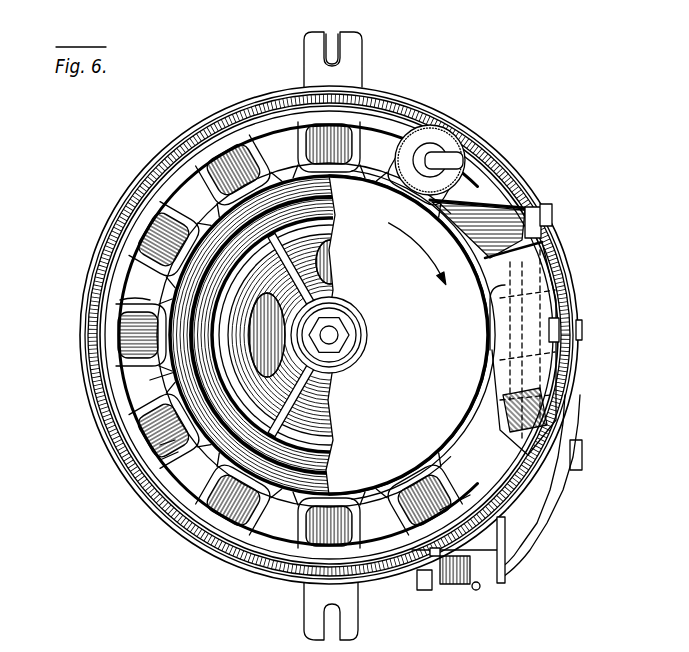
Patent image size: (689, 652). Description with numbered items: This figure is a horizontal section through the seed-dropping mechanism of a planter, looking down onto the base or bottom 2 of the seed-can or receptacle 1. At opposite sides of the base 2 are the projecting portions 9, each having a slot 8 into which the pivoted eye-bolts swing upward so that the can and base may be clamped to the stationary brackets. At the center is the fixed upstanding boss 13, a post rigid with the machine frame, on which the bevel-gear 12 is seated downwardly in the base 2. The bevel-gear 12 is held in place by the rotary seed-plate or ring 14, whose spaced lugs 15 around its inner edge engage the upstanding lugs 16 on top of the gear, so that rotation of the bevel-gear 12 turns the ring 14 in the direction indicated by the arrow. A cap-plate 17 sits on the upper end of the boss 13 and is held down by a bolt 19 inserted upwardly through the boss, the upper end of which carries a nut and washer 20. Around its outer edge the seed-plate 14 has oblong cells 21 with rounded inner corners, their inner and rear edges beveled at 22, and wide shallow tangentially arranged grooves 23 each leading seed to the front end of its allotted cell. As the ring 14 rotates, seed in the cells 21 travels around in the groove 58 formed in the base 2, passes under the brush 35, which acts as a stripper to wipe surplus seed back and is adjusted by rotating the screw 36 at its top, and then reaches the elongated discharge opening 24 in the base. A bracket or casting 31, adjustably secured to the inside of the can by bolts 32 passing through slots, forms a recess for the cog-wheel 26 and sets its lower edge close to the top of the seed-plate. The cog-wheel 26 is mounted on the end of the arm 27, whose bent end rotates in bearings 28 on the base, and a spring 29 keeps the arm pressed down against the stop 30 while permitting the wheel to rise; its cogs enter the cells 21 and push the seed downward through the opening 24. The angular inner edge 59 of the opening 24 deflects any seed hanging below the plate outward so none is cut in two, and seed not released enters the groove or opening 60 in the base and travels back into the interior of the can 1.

The seed-can or receptacle 1 is at (513, 165).
The bottom or base-plate or casting 2 is at (103, 435).
The slots 8 is at (330, 55).
The projecting portions 9 is at (310, 47).
The bevel-gear 12 is at (323, 385).
The boss 13 is at (330, 298).
The rotary seed-plate or ring 14 is at (170, 373).
The spaced lugs 15 is at (240, 200).
The upstanding lugs 16 is at (245, 225).
The cap-plate 17 is at (343, 443).
The bolt 19 is at (337, 333).
The nut and washer 20 is at (342, 338).
The cells 21 is at (143, 333).
The beveled edges 22 is at (165, 460).
The wide shallow grooves 23 is at (135, 302).
The elongated opening 24 is at (577, 362).
The cog-wheel 26 is at (570, 287).
The arm 27 is at (557, 492).
The bearings 28 is at (497, 582).
The spring 29 is at (460, 582).
The stop 30 is at (580, 453).
The bracket or casting 31 is at (508, 276).
The bolts 32 is at (552, 217).
The brush 35 is at (425, 130).
The screw 36 is at (453, 155).
The groove 58 is at (160, 240).
The angular inner edge 59 is at (495, 366).
The groove or opening 60 is at (477, 503).